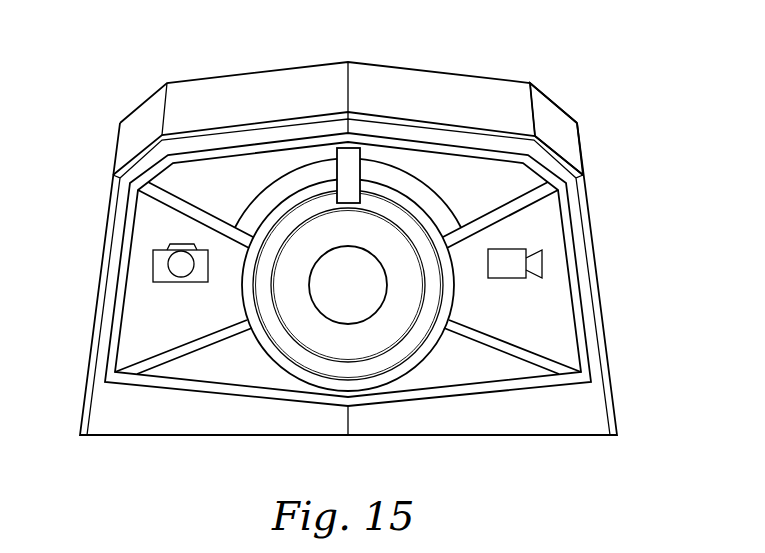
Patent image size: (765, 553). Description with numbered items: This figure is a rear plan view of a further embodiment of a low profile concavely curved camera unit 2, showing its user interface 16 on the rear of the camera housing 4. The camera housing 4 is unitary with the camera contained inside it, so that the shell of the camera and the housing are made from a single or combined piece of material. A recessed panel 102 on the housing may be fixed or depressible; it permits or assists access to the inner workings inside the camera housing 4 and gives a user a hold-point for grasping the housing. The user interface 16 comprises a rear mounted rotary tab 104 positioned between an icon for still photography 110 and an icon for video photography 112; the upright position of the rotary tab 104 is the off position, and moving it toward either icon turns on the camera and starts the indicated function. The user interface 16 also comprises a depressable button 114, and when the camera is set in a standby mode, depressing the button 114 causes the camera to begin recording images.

The camera unit 2 is at (626, 252).
The camera housing 4 is at (578, 125).
The user interface 16 is at (626, 363).
The recessed panel 102 is at (423, 90).
The rotary tab 104 is at (337, 158).
The still photography icon 110 is at (162, 248).
The video photography icon 112 is at (522, 250).
The depressable button 114 is at (302, 310).